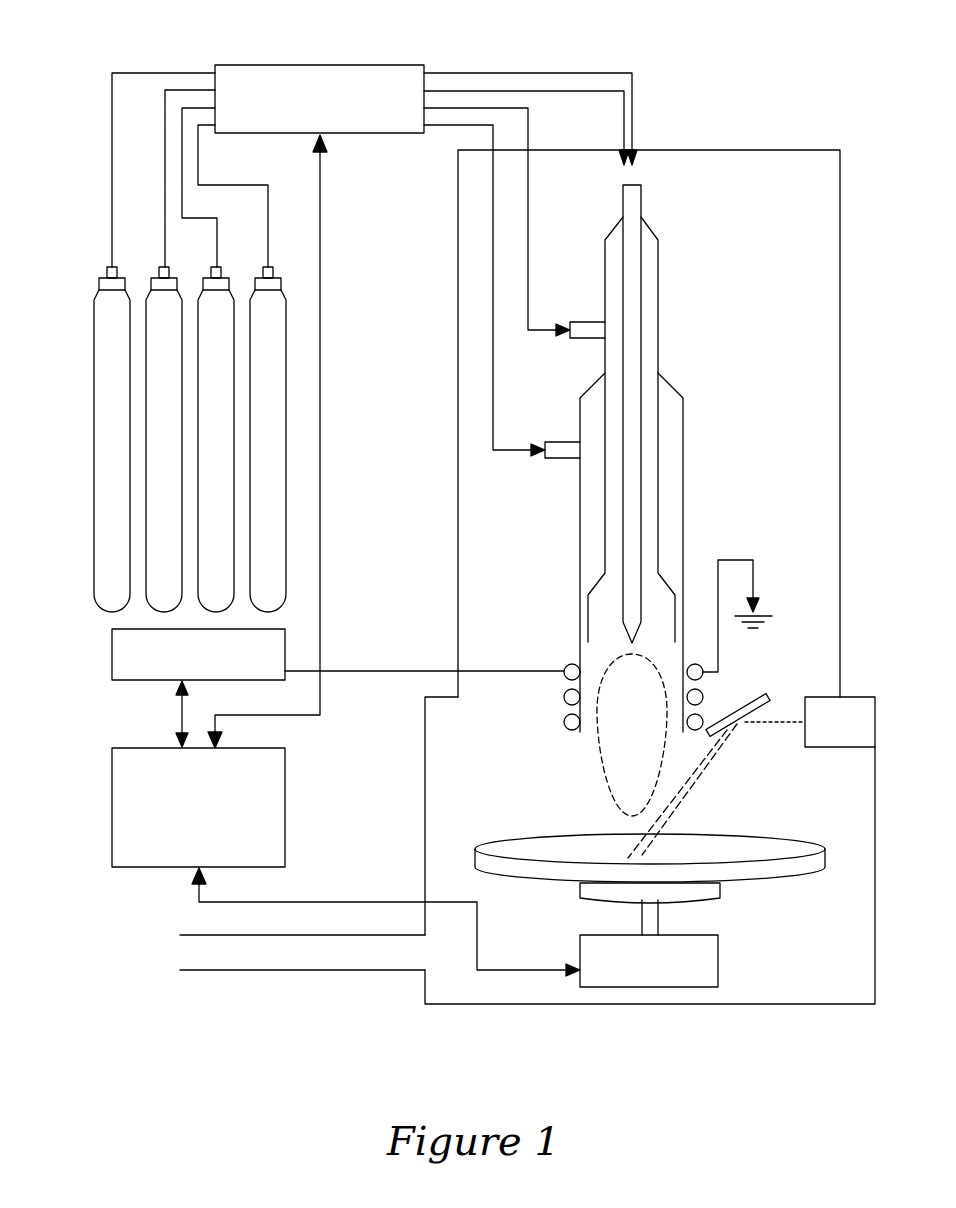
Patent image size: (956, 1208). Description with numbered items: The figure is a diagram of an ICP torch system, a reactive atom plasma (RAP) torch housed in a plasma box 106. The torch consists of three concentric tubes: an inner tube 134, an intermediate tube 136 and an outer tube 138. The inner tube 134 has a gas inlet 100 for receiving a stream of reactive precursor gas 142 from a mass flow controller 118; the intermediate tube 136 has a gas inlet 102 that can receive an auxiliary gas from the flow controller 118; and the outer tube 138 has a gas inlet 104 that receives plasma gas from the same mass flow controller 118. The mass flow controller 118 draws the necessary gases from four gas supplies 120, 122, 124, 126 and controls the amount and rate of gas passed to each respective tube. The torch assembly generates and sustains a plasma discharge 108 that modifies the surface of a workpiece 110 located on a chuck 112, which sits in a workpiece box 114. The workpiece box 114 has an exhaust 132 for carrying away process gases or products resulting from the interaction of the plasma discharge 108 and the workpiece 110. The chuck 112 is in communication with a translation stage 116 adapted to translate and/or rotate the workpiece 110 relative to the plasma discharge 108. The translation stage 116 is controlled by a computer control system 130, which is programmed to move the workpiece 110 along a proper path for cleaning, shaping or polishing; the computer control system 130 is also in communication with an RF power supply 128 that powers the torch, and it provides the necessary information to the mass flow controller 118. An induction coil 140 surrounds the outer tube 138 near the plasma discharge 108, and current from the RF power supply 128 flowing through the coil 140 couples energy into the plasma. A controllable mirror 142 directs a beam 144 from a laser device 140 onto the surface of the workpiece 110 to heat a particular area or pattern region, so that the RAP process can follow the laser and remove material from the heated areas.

The gas inlet 100 is at (687, 401).
The gas inlet 102 is at (582, 322).
The gas inlet 104 is at (563, 458).
The plasma box 106 is at (735, 150).
The plasma discharge 108 is at (632, 728).
The workpiece 110 is at (593, 850).
The chuck 112 is at (707, 897).
The workpiece box 114 is at (425, 805).
The translation stage 116 is at (667, 987).
The mass flow controller 118 is at (320, 65).
The gas supply 120 is at (95, 355).
The gas supply 122 is at (146, 407).
The gas supply 124 is at (198, 477).
The gas supply 126 is at (250, 527).
The RF power supply 128 is at (112, 650).
The computer control system 130 is at (112, 800).
The exhaust 132 is at (342, 952).
The inner tube 134 is at (650, 295).
The intermediate tube 136 is at (659, 349).
The outer tube 138 is at (685, 457).
The induction coil 140 is at (463, 73).
The controllable mirror 142 is at (565, 73).
The beam 144 is at (685, 793).